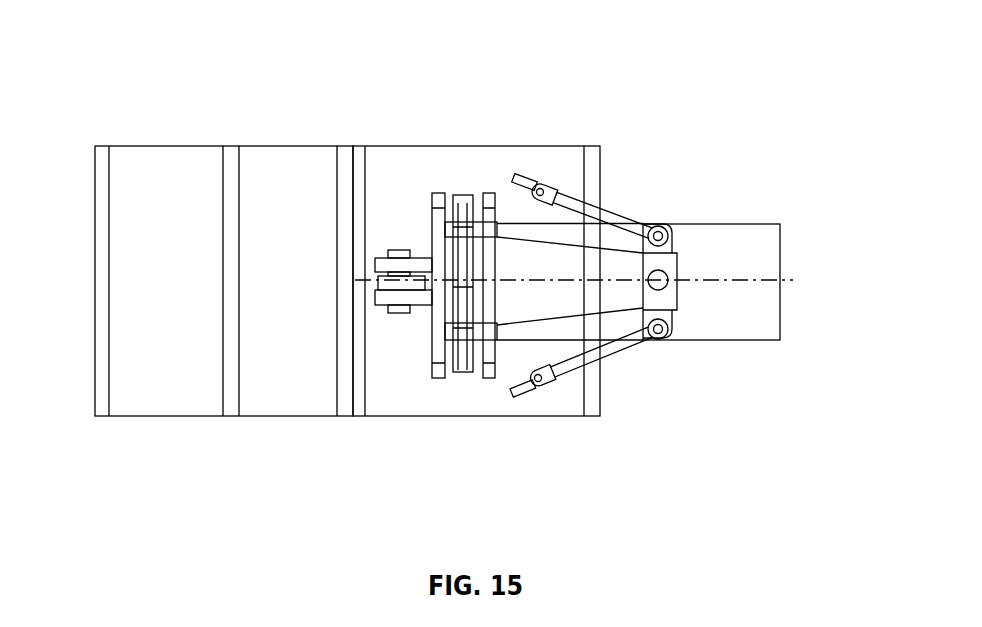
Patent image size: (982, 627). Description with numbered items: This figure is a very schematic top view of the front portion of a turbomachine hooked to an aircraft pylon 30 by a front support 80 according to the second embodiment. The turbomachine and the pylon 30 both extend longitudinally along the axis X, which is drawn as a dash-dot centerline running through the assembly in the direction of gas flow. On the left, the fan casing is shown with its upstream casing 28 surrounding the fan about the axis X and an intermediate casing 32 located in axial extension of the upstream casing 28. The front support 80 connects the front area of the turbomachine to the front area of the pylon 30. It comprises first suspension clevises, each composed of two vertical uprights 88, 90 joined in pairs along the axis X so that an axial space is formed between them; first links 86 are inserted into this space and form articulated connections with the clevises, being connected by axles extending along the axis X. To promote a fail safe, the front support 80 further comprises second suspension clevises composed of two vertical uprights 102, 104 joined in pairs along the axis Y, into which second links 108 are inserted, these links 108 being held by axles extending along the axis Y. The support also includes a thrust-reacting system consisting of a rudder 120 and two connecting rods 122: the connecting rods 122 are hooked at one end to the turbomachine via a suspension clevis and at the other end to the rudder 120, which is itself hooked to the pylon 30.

The front support 80 is at (712, 48).
The upstream casing 28 is at (153, 162).
The intermediate casing 32 is at (398, 168).
The pylon 30 is at (757, 238).
The axis X is at (790, 278).
The first links 86 is at (462, 195).
The vertical upright 88 is at (494, 222).
The vertical upright 90 is at (434, 215).
The vertical upright 102 is at (392, 250).
The vertical upright 104 is at (415, 285).
The second links 108 is at (430, 282).
The rudder 120 is at (664, 312).
The connecting rods 122 is at (620, 213).